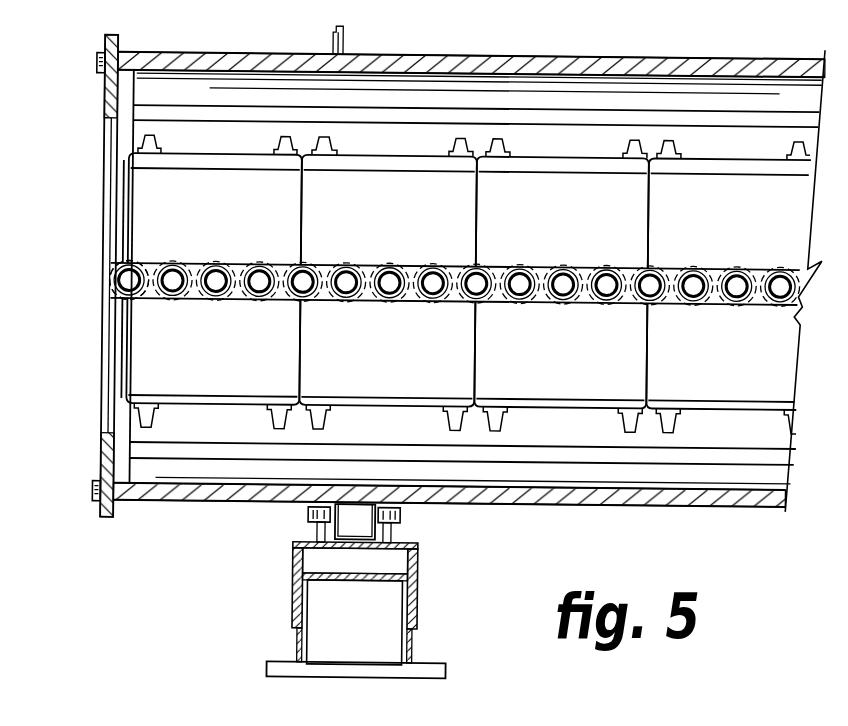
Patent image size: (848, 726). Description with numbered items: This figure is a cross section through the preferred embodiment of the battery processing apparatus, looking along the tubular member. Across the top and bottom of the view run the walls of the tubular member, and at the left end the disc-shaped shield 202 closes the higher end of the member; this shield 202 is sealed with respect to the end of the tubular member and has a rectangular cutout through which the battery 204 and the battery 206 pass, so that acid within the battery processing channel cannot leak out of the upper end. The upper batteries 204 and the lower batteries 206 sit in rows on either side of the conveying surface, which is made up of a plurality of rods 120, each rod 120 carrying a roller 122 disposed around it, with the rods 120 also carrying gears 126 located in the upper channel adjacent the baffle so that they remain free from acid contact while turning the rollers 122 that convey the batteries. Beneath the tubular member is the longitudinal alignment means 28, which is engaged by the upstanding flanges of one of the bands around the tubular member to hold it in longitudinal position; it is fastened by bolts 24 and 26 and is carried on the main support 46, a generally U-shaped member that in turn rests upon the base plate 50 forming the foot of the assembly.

The disc-shaped shield 202 is at (105, 92).
The battery 204 is at (230, 229).
The battery 206 is at (219, 379).
The rod 120 is at (130, 279).
The roller 122 is at (118, 264).
The gear 126 is at (140, 309).
The bolt 24 is at (320, 530).
The bolt 26 is at (400, 530).
The longitudinal alignment means 28 is at (426, 571).
The main support 46 is at (412, 655).
The base plate 50 is at (445, 670).